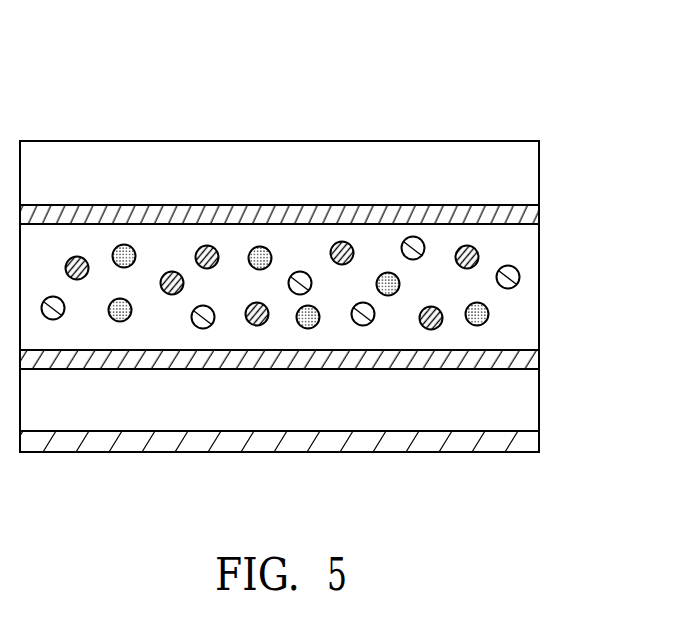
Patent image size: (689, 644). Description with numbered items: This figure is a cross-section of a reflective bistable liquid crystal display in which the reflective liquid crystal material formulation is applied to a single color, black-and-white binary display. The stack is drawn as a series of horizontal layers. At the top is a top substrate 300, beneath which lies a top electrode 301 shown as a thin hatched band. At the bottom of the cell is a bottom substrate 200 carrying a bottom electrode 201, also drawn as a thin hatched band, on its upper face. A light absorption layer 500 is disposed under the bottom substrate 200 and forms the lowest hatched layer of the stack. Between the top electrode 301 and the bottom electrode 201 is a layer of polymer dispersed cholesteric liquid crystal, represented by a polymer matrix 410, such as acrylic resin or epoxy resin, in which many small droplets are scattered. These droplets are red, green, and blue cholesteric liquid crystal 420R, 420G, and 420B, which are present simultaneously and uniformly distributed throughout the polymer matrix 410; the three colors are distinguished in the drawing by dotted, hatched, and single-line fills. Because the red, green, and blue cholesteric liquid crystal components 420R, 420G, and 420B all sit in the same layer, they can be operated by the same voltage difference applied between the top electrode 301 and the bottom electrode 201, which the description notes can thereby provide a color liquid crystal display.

The top substrate 300 is at (539, 172).
The top electrode 301 is at (539, 213).
The polymer matrix 410 is at (539, 285).
The red cholesteric liquid crystal 420R is at (123, 245).
The blue cholesteric liquid crystal 420B is at (170, 271).
The green cholesteric liquid crystal 420G is at (213, 246).
The bottom electrode 201 is at (539, 360).
The bottom substrate 200 is at (539, 400).
The light absorption layer 500 is at (539, 440).